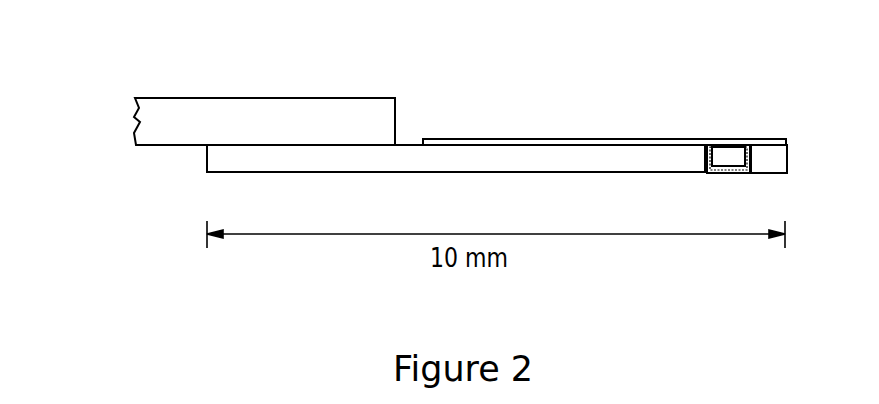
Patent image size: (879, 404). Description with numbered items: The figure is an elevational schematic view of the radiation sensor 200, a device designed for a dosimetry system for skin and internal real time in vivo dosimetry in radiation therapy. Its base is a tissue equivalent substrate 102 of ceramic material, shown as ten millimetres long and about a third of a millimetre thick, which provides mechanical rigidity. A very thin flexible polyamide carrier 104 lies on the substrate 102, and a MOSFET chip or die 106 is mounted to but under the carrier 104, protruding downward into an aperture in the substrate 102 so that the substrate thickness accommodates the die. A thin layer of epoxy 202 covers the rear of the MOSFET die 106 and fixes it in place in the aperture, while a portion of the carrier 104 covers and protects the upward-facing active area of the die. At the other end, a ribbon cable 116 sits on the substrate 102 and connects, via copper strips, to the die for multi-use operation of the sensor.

The antenna assembly 200 is at (120, 45).
The ribbon cable 116 is at (266, 98).
The substrate 102 is at (227, 173).
The flexible polyamide carrier 104 is at (460, 138).
The MOSFET chip or die 106 is at (730, 153).
The layer of epoxy 202 is at (721, 174).